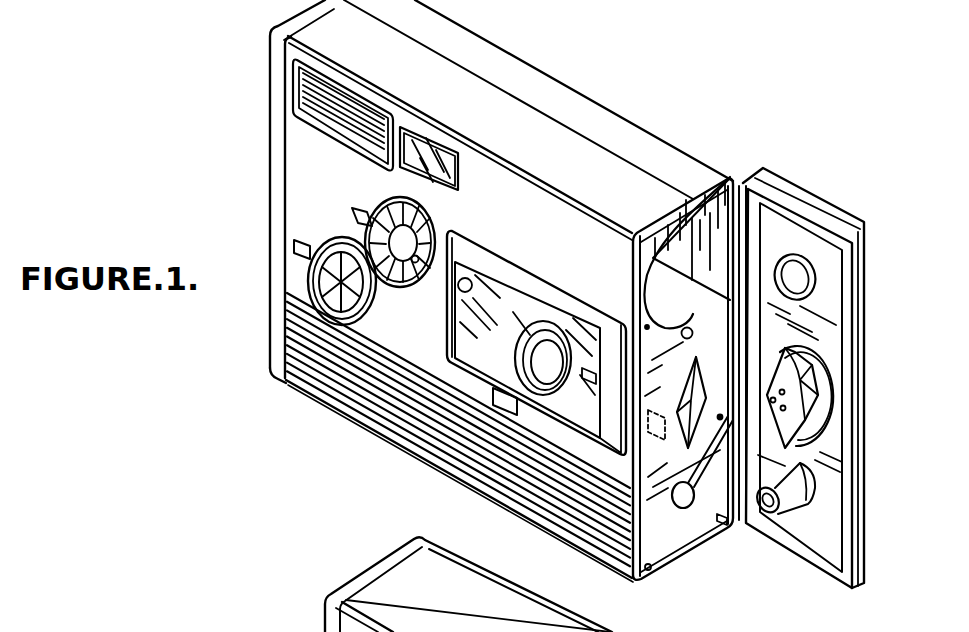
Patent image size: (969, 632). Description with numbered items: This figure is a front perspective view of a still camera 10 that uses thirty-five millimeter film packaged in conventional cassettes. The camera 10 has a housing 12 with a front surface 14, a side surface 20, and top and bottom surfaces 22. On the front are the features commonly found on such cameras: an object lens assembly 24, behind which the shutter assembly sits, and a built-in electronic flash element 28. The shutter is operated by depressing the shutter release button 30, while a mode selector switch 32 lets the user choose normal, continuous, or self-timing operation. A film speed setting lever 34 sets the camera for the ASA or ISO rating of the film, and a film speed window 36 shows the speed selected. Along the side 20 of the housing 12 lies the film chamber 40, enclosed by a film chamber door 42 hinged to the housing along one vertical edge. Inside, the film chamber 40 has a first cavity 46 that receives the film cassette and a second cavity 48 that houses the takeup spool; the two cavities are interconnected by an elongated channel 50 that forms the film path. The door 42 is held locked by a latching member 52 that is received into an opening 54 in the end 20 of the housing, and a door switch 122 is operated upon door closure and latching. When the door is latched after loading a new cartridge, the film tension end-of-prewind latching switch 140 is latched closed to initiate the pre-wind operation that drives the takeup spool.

The still camera 10 is at (381, 457).
The housing 12 is at (283, 331).
The front surface 14 is at (412, 350).
The side surface 20 is at (660, 545).
The top and bottom surfaces 22 is at (517, 78).
The object lens assembly 24 is at (548, 348).
The built-in electronic flash element 28 is at (322, 101).
The shutter release button 30 is at (364, 263).
The mode selector switch 32 is at (296, 246).
The film speed setting lever 34 is at (364, 212).
The film speed window 36 is at (413, 264).
The film chamber 40 is at (730, 181).
The film chamber door 42 is at (866, 289).
The first cavity 46 is at (659, 238).
The second cavity 48 is at (694, 508).
The elongated channel 50 is at (729, 522).
The latching member 52 is at (792, 446).
The opening 54 is at (682, 431).
The door switch 122 is at (690, 328).
The film tension end-of-prewind latching switch 140 is at (647, 400).